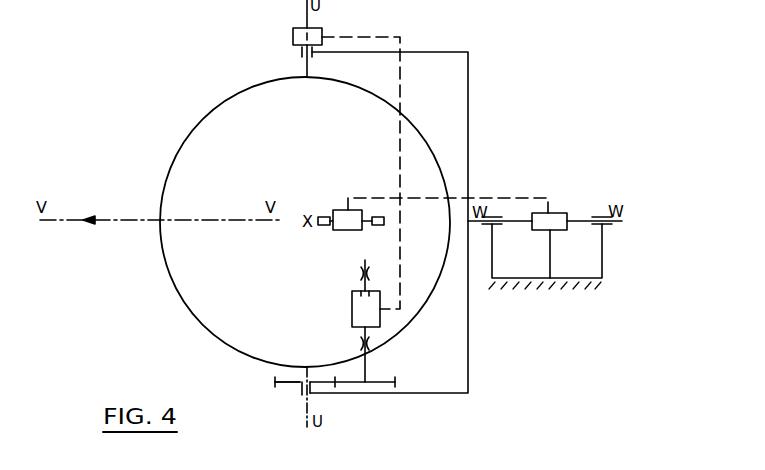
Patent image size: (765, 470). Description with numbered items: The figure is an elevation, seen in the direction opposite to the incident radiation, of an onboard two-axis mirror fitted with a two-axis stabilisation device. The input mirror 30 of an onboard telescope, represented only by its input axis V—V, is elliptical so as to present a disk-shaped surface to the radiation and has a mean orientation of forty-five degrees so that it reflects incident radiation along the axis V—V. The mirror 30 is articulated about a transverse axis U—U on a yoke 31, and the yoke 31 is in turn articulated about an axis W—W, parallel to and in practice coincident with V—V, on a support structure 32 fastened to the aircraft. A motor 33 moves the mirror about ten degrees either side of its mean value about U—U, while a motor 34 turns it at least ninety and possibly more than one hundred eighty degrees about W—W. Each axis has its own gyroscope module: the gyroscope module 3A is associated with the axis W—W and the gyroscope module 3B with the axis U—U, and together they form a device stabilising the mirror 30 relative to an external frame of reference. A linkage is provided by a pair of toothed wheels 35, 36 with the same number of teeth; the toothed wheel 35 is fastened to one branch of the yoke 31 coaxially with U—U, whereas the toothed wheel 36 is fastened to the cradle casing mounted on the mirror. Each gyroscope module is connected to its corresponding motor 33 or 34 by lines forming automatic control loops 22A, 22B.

The input mirror 30 is at (212, 107).
The motor 33 is at (293, 38).
The yoke 31 is at (468, 373).
The automatic control loop 22B is at (400, 148).
The automatic control loop 22A is at (515, 195).
The gyroscope module 3A is at (343, 231).
The gyroscope module 3B is at (352, 303).
The toothed wheel 36 is at (382, 375).
The toothed wheel 35 is at (288, 387).
The motor 34 is at (555, 212).
The support structure 32 is at (602, 256).